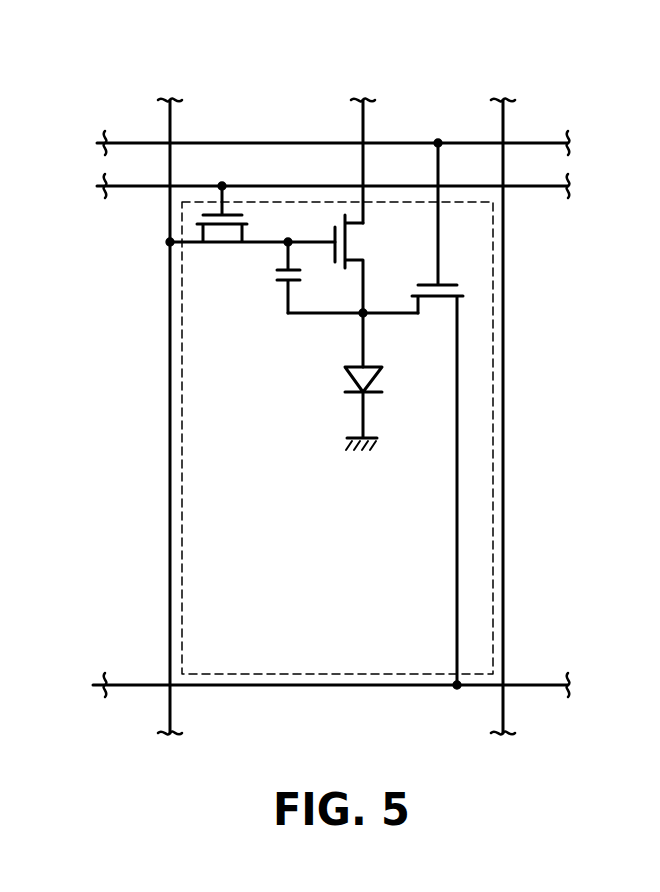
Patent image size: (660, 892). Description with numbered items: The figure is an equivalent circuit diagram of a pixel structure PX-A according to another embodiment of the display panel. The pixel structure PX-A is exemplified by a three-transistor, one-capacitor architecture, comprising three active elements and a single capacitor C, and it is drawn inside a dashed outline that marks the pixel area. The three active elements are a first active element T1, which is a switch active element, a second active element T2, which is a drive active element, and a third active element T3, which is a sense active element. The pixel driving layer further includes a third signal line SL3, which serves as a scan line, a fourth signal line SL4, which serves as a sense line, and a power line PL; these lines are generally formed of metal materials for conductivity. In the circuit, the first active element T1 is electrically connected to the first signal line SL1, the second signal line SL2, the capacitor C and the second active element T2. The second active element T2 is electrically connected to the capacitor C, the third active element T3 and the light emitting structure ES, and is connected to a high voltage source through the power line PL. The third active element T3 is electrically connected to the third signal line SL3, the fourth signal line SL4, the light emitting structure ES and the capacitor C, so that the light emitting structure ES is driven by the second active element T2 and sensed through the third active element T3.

The first signal line SL1 is at (170, 280).
The second signal line SL2 is at (136, 186).
The third signal line SL3 is at (136, 143).
The fourth signal line SL4 is at (136, 685).
The power line PL is at (363, 128).
The first active element T1 is at (186, 266).
The second active element T2 is at (341, 205).
The third active element T3 is at (525, 414).
The capacitor C is at (273, 277).
The light emitting structure ES is at (385, 380).
The pixel structure PX-A is at (493, 572).